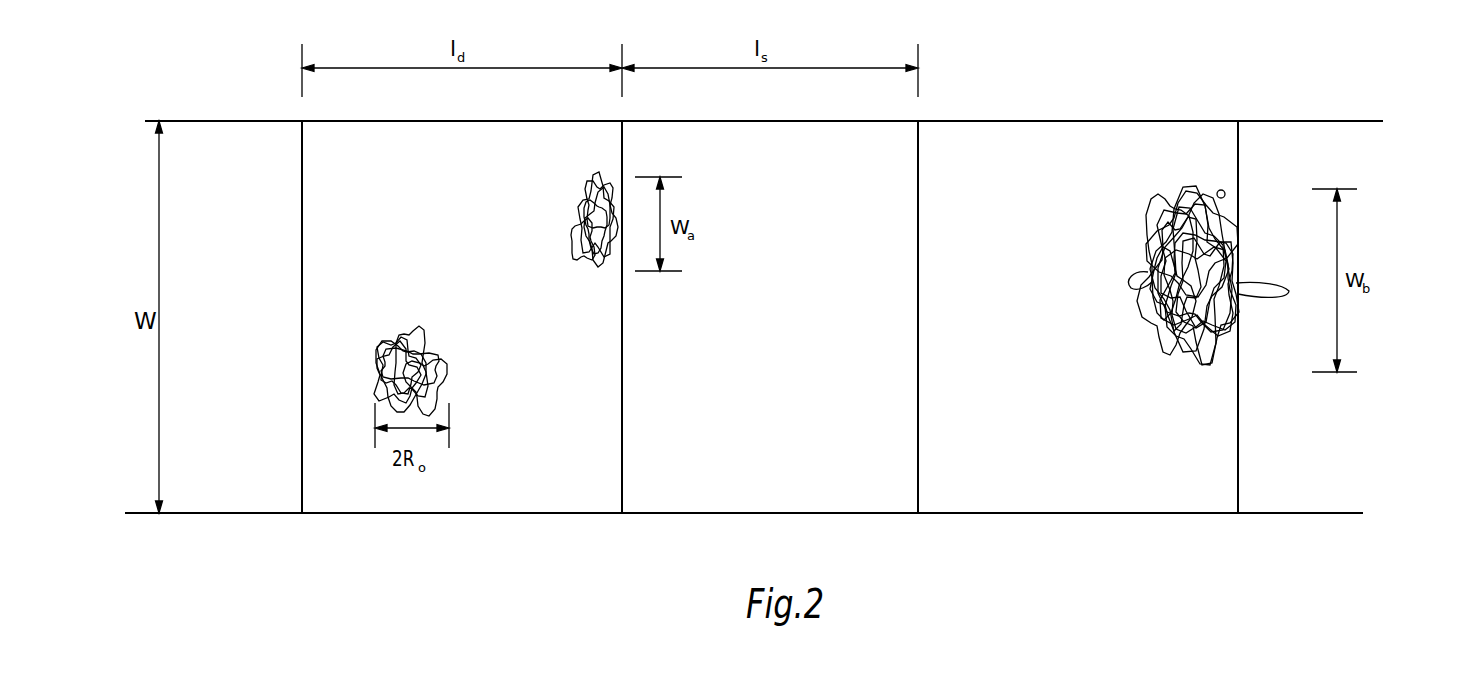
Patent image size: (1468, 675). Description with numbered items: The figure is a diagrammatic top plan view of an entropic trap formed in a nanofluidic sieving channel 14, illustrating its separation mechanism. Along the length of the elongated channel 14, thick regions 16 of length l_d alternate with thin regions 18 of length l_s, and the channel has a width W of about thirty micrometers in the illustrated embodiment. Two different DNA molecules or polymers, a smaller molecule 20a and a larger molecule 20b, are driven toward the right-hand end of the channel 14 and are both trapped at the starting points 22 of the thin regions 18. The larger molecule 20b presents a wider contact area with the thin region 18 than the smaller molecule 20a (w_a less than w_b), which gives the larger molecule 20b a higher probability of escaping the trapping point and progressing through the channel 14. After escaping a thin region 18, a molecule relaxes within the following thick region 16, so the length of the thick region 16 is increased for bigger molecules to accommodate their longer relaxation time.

The nanofluidic sieving channel 14 is at (1388, 133).
The thick region 16 is at (483, 173).
The thin region 18 is at (233, 153).
The smaller DNA molecule 20a is at (403, 328).
The larger DNA molecule 20b is at (1127, 280).
The starting point 22 is at (622, 434).